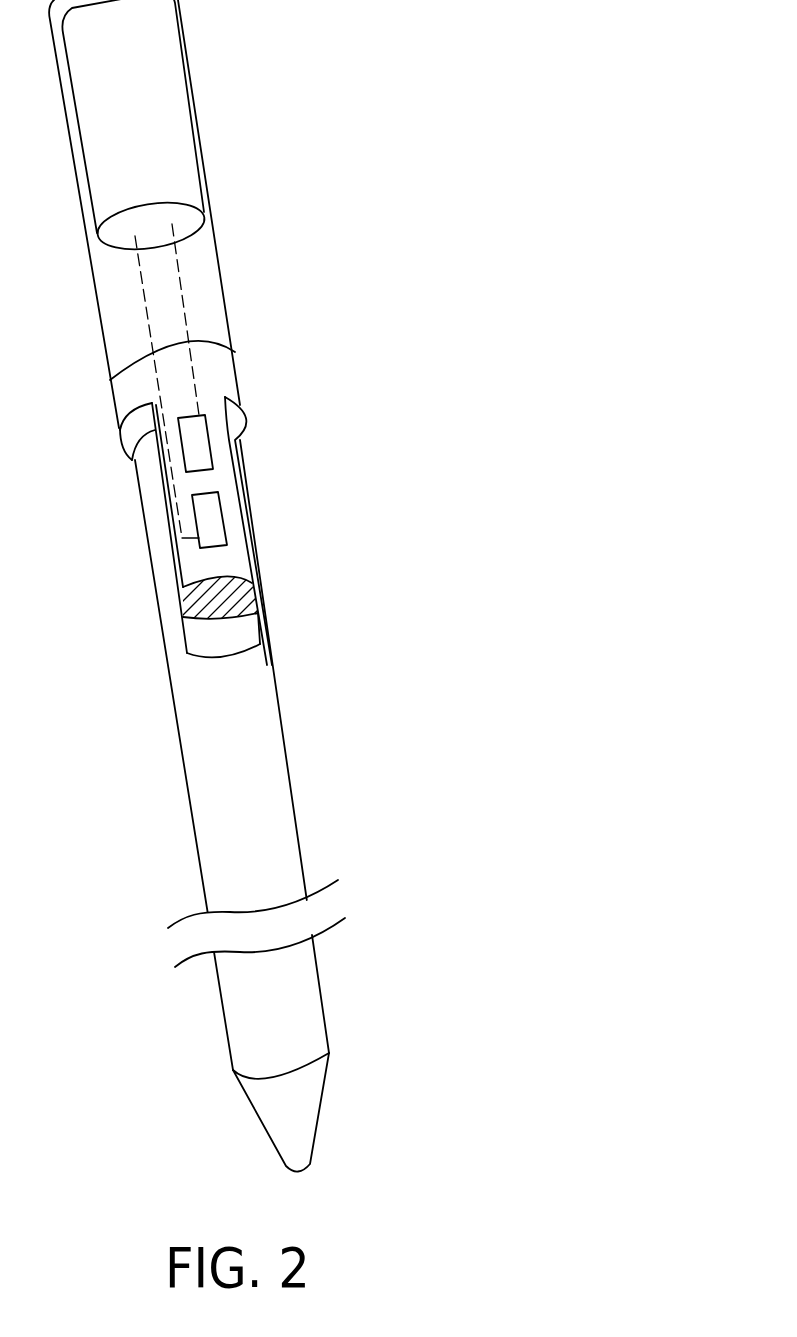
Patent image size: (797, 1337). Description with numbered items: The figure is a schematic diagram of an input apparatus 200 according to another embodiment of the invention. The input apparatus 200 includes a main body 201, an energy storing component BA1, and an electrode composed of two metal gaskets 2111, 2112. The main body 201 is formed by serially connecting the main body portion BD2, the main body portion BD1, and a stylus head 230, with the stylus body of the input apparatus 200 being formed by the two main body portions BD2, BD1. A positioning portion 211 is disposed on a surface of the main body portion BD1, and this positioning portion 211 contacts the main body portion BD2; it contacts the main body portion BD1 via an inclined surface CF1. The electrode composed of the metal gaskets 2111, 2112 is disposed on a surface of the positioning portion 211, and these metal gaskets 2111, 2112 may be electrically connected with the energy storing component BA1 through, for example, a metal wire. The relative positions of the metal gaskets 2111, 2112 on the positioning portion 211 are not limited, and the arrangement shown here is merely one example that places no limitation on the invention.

The input apparatus 200 is at (642, 1174).
The main body 201 is at (372, 625).
The main body portion BD1 is at (252, 710).
The main body portion BD2 is at (197, 270).
The energy storing component BA1 is at (165, 77).
The positioning portion 211 is at (213, 422).
The metal gasket 2111 is at (200, 452).
The metal gasket 2112 is at (210, 522).
The inclined surface CF1 is at (243, 605).
The stylus head 230 is at (293, 1109).